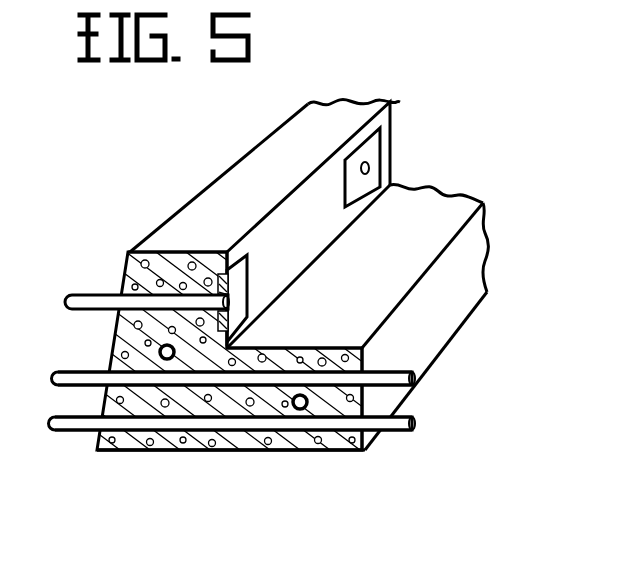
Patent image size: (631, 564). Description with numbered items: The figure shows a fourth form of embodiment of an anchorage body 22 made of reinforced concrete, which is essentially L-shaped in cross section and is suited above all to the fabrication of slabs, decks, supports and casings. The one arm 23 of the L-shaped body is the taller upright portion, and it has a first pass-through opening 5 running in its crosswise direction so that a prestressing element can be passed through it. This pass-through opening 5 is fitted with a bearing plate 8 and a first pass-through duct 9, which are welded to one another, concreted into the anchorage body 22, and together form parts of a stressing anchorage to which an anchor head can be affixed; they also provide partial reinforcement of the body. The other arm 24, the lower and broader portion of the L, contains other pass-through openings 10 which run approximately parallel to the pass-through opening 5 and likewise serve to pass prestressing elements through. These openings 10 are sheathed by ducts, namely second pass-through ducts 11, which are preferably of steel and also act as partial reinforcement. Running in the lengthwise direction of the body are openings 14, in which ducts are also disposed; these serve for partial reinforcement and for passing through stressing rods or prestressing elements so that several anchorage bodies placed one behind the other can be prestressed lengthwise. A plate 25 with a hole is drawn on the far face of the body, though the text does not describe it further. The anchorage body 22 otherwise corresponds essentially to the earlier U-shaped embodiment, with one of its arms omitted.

The first pass-through opening 5 is at (126, 273).
The bearing plate 8 is at (242, 284).
The first pass-through duct 9 is at (80, 303).
The second pass-through openings 10 is at (223, 432).
The second pass-through ducts 11 is at (82, 379).
The openings running in the lengthwise direction 14 is at (163, 359).
The anchorage body 22 is at (307, 454).
The one arm 23 is at (169, 262).
The other arm 24 is at (187, 432).
The anchor plate with hole 25 is at (390, 142).